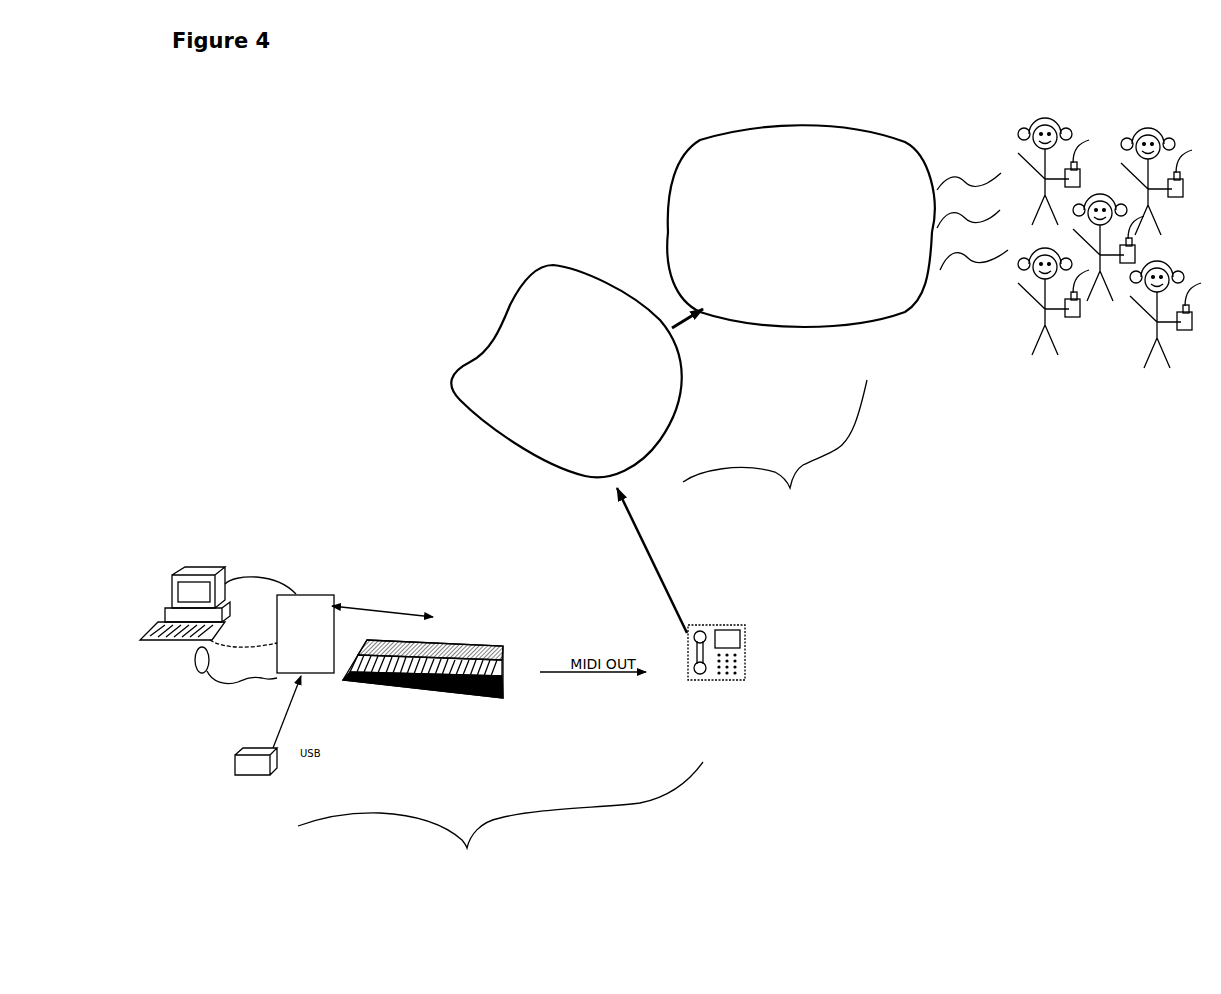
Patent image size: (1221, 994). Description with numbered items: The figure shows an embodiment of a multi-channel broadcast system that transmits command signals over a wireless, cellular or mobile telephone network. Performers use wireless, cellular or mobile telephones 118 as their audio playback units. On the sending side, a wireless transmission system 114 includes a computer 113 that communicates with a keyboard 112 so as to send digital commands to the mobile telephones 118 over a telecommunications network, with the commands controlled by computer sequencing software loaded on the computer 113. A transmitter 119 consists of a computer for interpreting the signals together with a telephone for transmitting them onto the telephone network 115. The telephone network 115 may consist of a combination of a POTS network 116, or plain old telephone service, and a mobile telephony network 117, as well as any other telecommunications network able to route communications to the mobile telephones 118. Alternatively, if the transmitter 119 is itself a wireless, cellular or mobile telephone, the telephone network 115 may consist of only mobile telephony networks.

The keyboard 112 is at (423, 677).
The computer 113 is at (185, 562).
The wireless transmission system 114 is at (500, 817).
The telephone network 115 is at (775, 446).
The POTS network 116 is at (491, 299).
The mobile telephony network 117 is at (726, 118).
The mobile telephones 118 is at (1081, 326).
The transmitter 119 is at (760, 664).